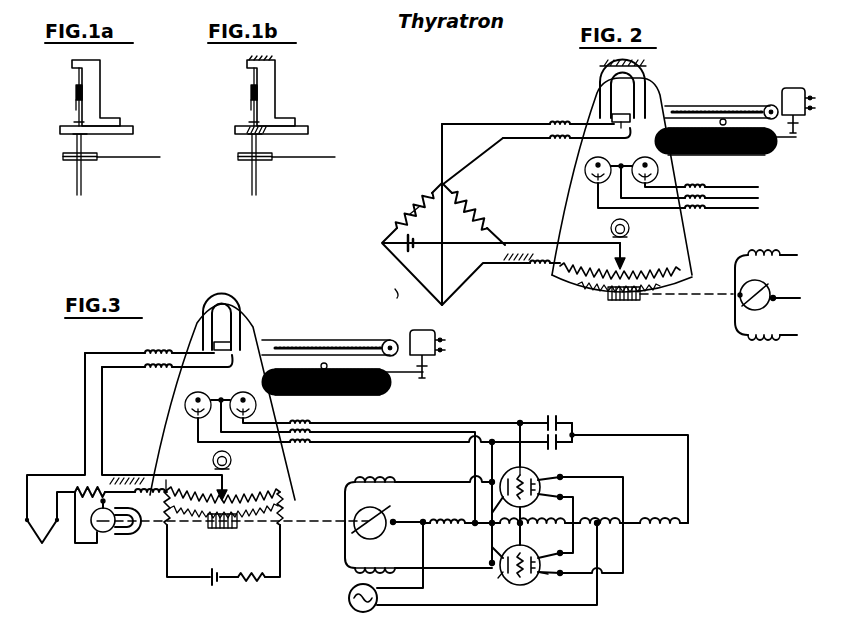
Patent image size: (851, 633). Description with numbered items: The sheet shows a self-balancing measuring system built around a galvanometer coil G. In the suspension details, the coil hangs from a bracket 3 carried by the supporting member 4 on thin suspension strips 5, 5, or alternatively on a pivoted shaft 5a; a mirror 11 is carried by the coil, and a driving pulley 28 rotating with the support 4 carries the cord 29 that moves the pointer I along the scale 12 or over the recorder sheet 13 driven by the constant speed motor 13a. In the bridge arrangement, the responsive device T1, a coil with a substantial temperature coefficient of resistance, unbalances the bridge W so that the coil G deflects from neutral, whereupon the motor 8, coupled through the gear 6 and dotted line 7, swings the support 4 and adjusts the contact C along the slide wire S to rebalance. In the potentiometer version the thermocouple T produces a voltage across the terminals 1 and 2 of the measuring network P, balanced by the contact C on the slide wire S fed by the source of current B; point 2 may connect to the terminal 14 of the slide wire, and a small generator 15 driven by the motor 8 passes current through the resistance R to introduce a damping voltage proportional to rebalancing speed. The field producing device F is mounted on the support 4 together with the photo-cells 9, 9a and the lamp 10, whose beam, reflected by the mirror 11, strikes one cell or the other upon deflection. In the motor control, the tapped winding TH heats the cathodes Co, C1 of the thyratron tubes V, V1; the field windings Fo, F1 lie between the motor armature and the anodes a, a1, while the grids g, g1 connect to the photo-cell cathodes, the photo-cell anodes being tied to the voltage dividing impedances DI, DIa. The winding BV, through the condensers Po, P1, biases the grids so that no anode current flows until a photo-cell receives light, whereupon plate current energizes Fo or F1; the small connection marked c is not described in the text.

In FIG. 1A, the bracket 3 is at (100, 92).
In FIG. 1B, the bracket 3 is at (275, 92).
In FIG. 1A, the supporting member 4 is at (128, 130).
In FIG. 1B, the supporting member 4 is at (303, 130).
In FIG. 2, the supporting member 4 is at (690, 246).
In FIG. 3, the supporting member 4 is at (160, 453).
In FIG. 1A, the suspension strips 5 is at (78, 71).
In FIG. 3, the suspension strips 5 is at (277, 500).
In FIG. 1B, the pivoted shaft 5a is at (253, 71).
In FIG. 1A, the mirror 11 is at (74, 106).
In FIG. 1B, the mirror 11 is at (249, 106).
In FIG. 2, the mirror 11 is at (630, 123).
In FIG. 3, the mirror 11 is at (230, 352).
In FIG. 1A, the galvanometer coil G is at (84, 92).
In FIG. 1B, the galvanometer coil G is at (259, 92).
In FIG. 2, the galvanometer coil G is at (627, 116).
In FIG. 3, the galvanometer coil G is at (228, 345).
In FIG. 1A, the driving pulley 28 is at (92, 160).
In FIG. 1B, the driving pulley 28 is at (267, 160).
In FIG. 1A, the cord 29 is at (138, 157).
In FIG. 1B, the cord 29 is at (312, 157).
In FIG. 2, the cord 29 is at (744, 106).
In FIG. 3, the cord 29 is at (350, 341).
In FIG. 2, the field producing device F is at (598, 84).
In FIG. 3, the field producing device F is at (203, 311).
In FIG. 2, the scale 12 is at (690, 111).
In FIG. 3, the scale 12 is at (287, 346).
In FIG. 2, the pointer I is at (724, 119).
In FIG. 3, the pointer I is at (325, 363).
In FIG. 2, the recorder sheet 13 is at (766, 157).
In FIG. 3, the recorder sheet 13 is at (384, 392).
In FIG. 2, the constant speed motor 13a is at (786, 88).
In FIG. 3, the constant speed motor 13a is at (438, 334).
In FIG. 2, the photo-cell 9 is at (594, 181).
In FIG. 3, the photo-cell 9 is at (193, 416).
In FIG. 2, the photo-cell 9a is at (660, 172).
In FIG. 3, the photo-cell 9a is at (238, 396).
In FIG. 2, the lamp 10 is at (611, 230).
In FIG. 3, the lamp 10 is at (232, 461).
In FIG. 2, the bridge W is at (418, 208).
In FIG. 2, the responsive device T1 is at (397, 293).
In FIG. 2, the contact C is at (632, 253).
In FIG. 3, the contact C is at (233, 486).
In FIG. 2, the slide wire S is at (652, 271).
In FIG. 2, the gear 6 is at (626, 302).
In FIG. 3, the gear 6 is at (226, 530).
In FIG. 2, the dotted line 7 is at (700, 300).
In FIG. 3, the dotted line 7 is at (308, 524).
In FIG. 2, the motor 8 is at (768, 293).
In FIG. 3, the motor 8 is at (388, 518).
In FIG. 3, the terminal of the slide wire 14 is at (170, 479).
In FIG. 3, the measuring network P is at (72, 415).
In FIG. 3, the resistance R is at (82, 489).
In FIG. 3, the terminal 1 is at (20, 538).
In FIG. 3, the terminal 2 is at (63, 538).
In FIG. 3, the thermocouple T is at (42, 547).
In FIG. 3, the generator 15 is at (100, 530).
In FIG. 3, the source of current B is at (212, 587).
In FIG. 3, the field winding Fo is at (370, 480).
In FIG. 3, the field winding F1 is at (357, 570).
In FIG. 3, the voltage dividing impedance DI is at (445, 528).
In FIG. 3, the voltage dividing impedance DIa is at (535, 528).
In FIG. 3, the tapped winding TH is at (600, 506).
In FIG. 3, the winding BV is at (655, 528).
In FIG. 3, the tube V is at (540, 476).
In FIG. 3, the tube V1 is at (523, 587).
In FIG. 3, the anode a is at (512, 478).
In FIG. 3, the anode a1 is at (503, 572).
In FIG. 3, the grid g is at (500, 510).
In FIG. 3, the grid g1 is at (512, 586).
In FIG. 3, the cathode Co is at (561, 525).
In FIG. 3, the cathode C1 is at (545, 581).
In FIG. 3, the connection c is at (598, 525).
In FIG. 3, the condenser Po is at (563, 421).
In FIG. 3, the condenser P1 is at (560, 451).